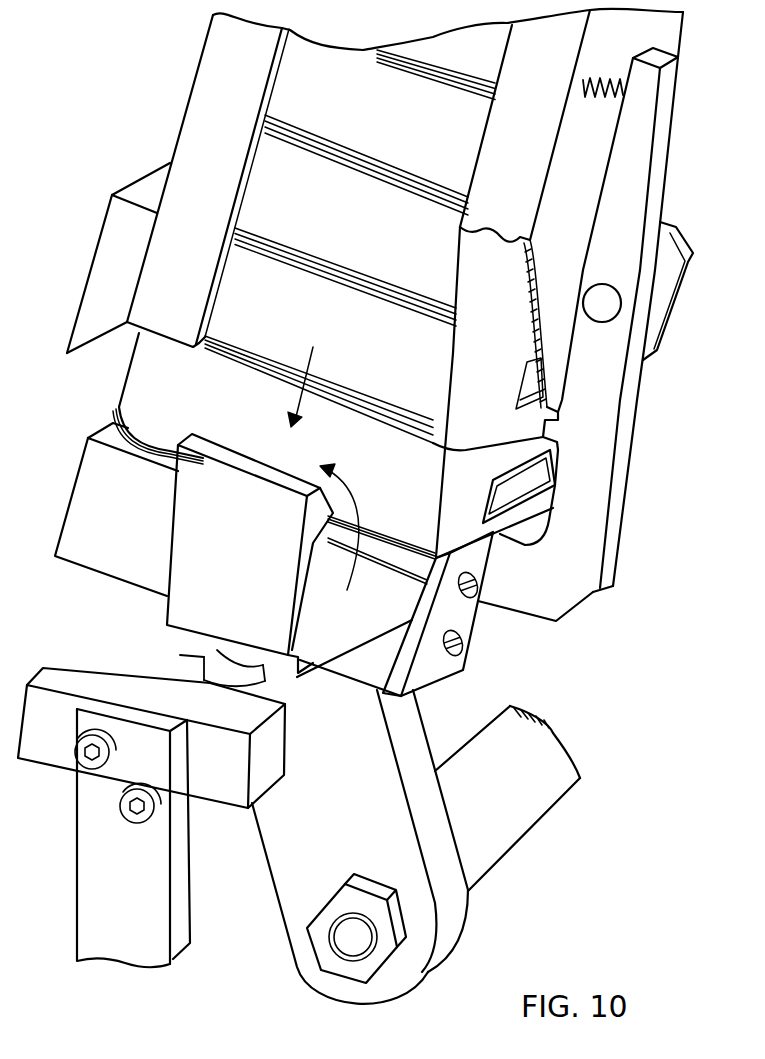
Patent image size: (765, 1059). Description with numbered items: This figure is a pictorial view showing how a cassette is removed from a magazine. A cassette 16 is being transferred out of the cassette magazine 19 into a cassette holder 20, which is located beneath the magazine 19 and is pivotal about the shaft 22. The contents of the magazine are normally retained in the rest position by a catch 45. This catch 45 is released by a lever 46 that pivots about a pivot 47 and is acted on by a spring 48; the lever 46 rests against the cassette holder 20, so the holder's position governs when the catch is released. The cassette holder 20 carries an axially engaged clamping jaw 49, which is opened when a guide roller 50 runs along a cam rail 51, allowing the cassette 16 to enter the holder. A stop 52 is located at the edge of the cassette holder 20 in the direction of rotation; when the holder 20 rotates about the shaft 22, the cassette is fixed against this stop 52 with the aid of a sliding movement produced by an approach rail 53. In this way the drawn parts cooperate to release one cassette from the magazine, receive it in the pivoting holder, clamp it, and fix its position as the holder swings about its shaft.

The cassette 16 is at (264, 201).
The cassette magazine 19 is at (178, 109).
The cassette holder 20 is at (90, 466).
The shaft 22 is at (503, 841).
The catch 45 is at (556, 431).
The lever 46 is at (593, 558).
The pivot 47 is at (610, 318).
The spring 48 is at (601, 80).
The clamping jaw 49 is at (200, 505).
The guide roller 50 is at (208, 665).
The cam rail 51 is at (88, 676).
The stop 52 is at (470, 628).
The approach rail 53 is at (85, 325).